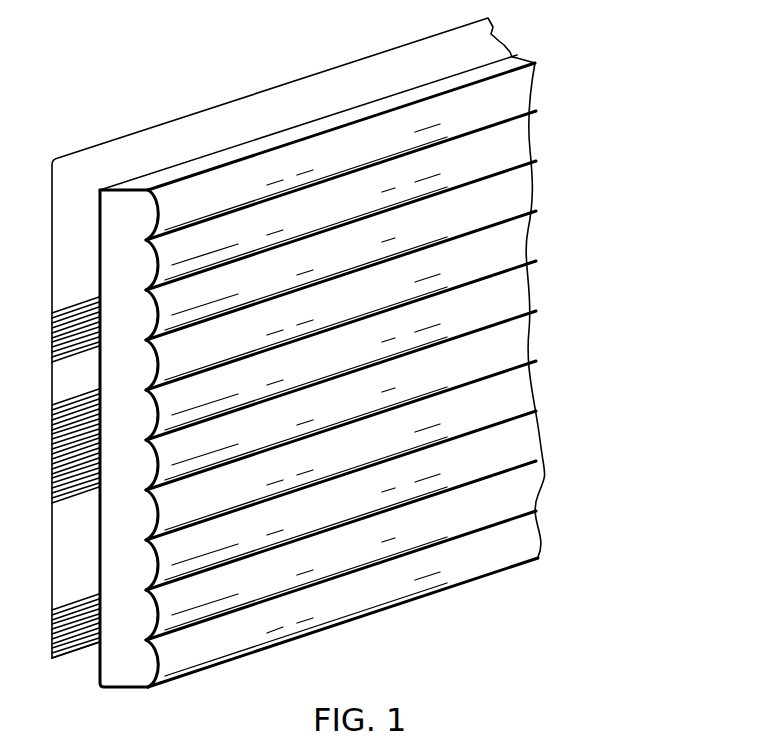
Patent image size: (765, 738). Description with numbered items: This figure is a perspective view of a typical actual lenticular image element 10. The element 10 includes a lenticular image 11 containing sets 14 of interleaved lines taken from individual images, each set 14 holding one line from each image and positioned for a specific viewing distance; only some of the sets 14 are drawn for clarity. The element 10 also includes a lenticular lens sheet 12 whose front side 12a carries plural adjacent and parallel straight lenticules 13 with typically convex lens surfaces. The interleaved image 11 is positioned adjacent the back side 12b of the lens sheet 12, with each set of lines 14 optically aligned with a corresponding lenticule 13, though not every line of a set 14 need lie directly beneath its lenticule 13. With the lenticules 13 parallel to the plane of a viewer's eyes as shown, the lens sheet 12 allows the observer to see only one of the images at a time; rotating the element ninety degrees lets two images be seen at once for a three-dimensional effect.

The lenticular image element 10 is at (372, 36).
The lenticular image 11 is at (72, 157).
The lenticular lens sheet 12 is at (202, 177).
The front side 12a is at (185, 660).
The back side 12b is at (97, 675).
The lenticules 13 is at (173, 657).
The sets of interleaved lines 14 is at (50, 313).